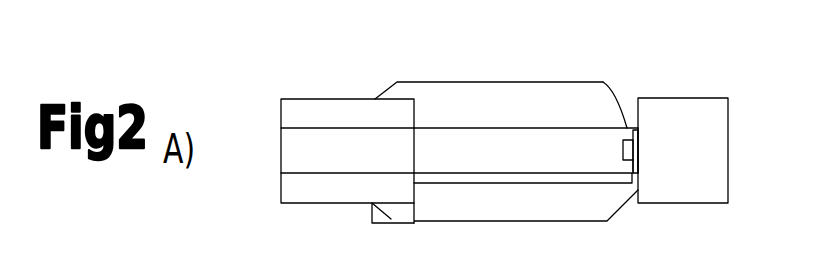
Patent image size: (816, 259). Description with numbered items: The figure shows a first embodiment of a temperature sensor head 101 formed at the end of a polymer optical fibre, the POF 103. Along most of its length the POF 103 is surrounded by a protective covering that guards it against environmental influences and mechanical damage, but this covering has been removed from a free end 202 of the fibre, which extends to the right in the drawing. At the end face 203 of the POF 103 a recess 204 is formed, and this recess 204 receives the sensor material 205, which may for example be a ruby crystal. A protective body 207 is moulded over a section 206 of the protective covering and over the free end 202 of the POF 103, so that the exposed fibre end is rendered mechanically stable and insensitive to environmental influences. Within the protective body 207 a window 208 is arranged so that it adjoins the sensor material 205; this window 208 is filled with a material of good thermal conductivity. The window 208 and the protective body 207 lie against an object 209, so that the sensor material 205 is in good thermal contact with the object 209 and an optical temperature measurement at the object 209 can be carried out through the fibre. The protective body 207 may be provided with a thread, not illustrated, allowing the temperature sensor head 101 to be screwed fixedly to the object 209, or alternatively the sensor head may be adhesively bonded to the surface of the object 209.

The temperature sensor head 101 is at (636, 58).
The POF 103 is at (343, 167).
The free end 202 is at (523, 184).
The end face 203 is at (639, 128).
The recess 204 is at (633, 134).
The sensor material 205 is at (623, 152).
The section 206 is at (391, 223).
The protective body 207 is at (440, 81).
The window 208 is at (634, 161).
The object 209 is at (712, 168).